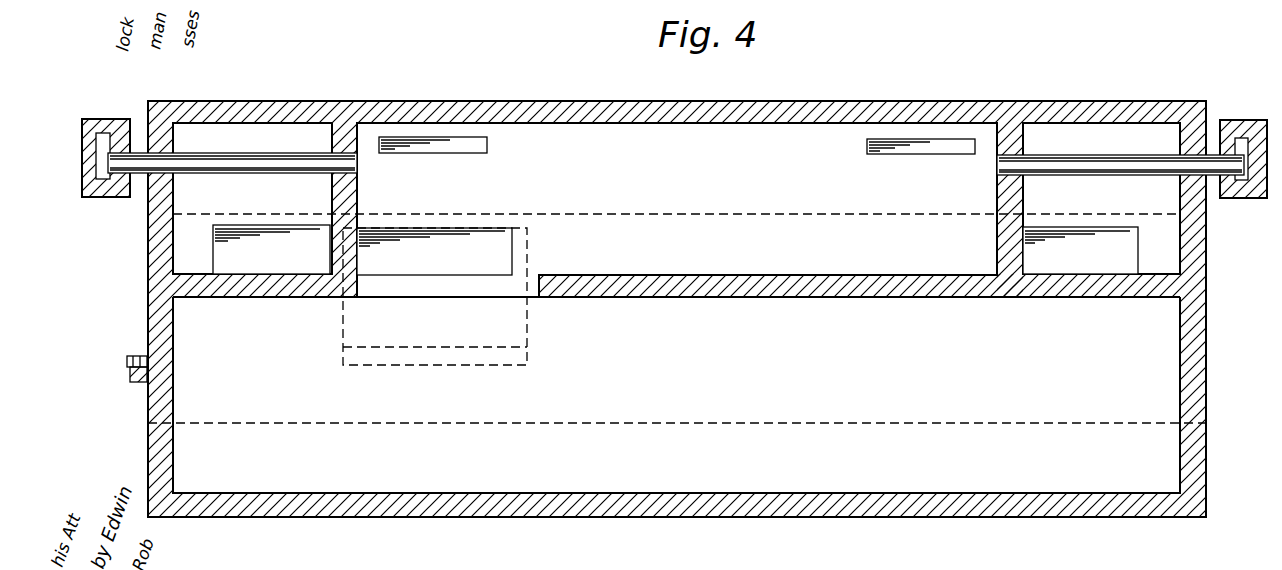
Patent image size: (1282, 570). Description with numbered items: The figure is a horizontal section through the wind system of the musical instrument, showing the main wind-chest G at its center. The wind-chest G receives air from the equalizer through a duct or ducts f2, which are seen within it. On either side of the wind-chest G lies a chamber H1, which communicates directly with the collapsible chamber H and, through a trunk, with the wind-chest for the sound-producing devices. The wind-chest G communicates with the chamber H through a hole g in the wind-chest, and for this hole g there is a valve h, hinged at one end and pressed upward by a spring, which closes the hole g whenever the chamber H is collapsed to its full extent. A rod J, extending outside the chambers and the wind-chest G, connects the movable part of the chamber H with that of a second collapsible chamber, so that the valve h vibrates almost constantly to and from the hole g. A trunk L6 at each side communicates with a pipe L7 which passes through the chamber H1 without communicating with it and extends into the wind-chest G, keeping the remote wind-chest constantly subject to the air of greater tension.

The wind-chest G is at (677, 199).
The duct f2 is at (487, 150).
The chamber H1 is at (675, 227).
The hole g is at (434, 251).
The valve h is at (527, 327).
The trunk L6 is at (1242, 138).
The pipe L7 is at (228, 173).
The rod J is at (127, 378).